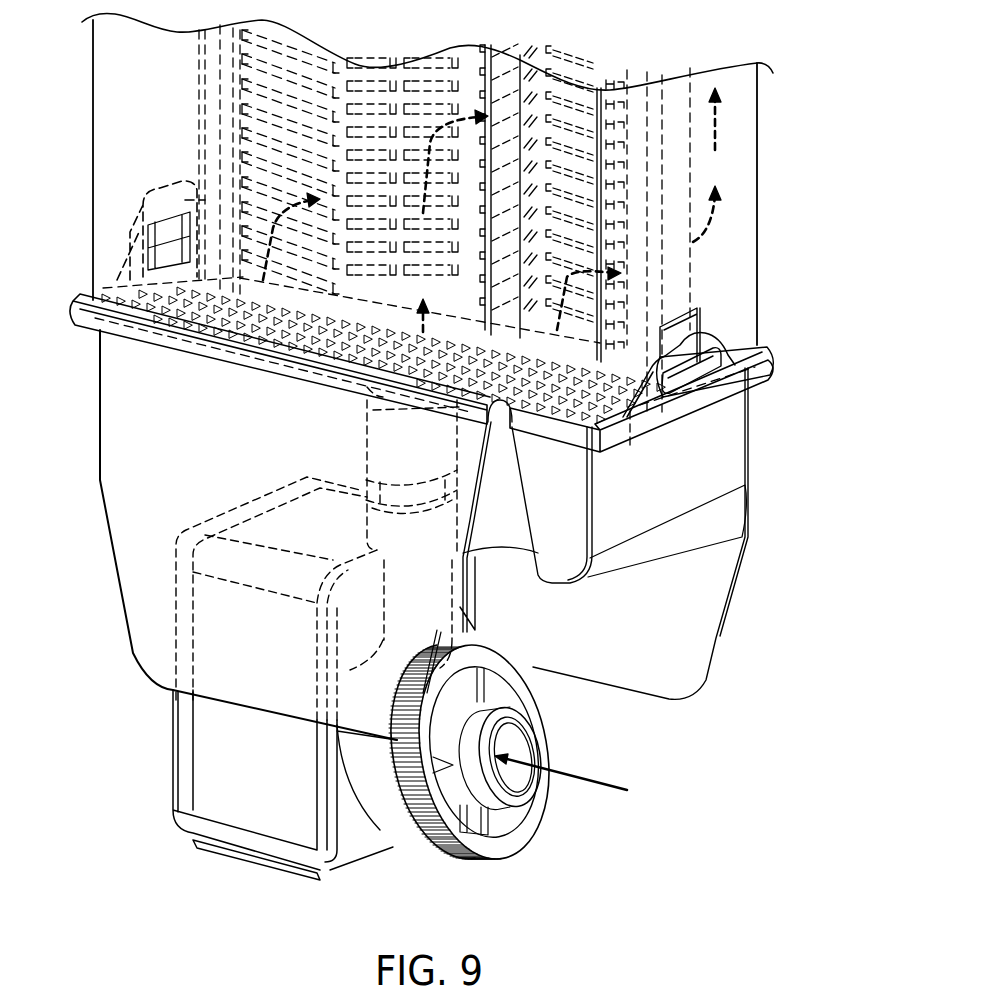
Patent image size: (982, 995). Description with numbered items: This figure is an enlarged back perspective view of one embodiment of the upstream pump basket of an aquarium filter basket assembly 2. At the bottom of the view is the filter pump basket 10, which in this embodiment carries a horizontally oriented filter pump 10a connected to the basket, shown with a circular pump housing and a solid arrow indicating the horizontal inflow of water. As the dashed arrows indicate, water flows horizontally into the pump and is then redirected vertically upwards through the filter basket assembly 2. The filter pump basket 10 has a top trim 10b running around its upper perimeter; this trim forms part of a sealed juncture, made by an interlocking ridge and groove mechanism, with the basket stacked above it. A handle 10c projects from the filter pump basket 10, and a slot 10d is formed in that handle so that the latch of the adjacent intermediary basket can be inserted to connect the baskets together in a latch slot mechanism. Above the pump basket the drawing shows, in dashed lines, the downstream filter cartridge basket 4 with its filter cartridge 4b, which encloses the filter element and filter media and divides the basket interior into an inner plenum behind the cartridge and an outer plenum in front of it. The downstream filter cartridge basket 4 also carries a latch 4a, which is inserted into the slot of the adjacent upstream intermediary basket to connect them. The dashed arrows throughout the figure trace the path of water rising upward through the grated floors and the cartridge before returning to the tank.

The filter basket assembly 2 is at (62, 393).
The downstream filter cartridge basket 4 is at (757, 237).
The latch 4a is at (703, 338).
The filter cartridge 4b is at (673, 182).
The filter pump basket 10 is at (100, 480).
The filter pump 10a is at (175, 755).
The top trim 10b is at (773, 362).
The handle 10c is at (735, 357).
The slot 10d is at (705, 345).